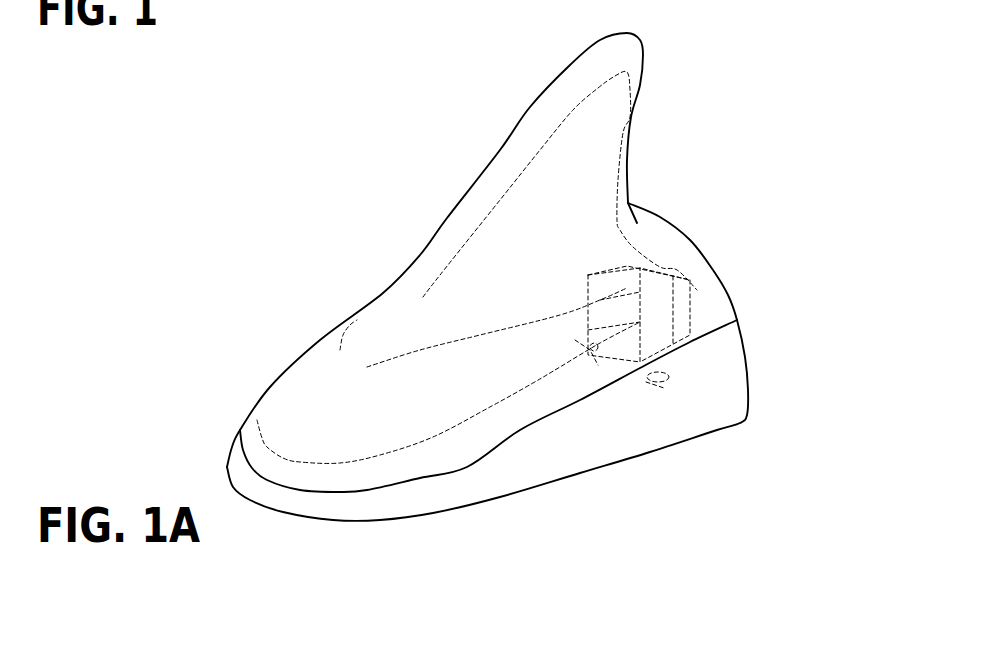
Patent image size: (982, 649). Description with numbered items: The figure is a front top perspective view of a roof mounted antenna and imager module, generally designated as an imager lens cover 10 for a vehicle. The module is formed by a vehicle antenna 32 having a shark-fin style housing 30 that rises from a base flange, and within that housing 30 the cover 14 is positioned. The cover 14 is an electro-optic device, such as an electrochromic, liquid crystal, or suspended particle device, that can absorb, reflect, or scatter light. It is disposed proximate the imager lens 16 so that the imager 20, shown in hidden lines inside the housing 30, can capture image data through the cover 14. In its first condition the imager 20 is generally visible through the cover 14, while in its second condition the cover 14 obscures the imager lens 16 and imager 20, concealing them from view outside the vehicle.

The imager lens cover 10 is at (533, 262).
The cover 14 is at (703, 288).
The imager lens 16 is at (695, 308).
The imager 20 is at (668, 363).
The housing 30 is at (390, 315).
The vehicle antenna 32 is at (635, 112).